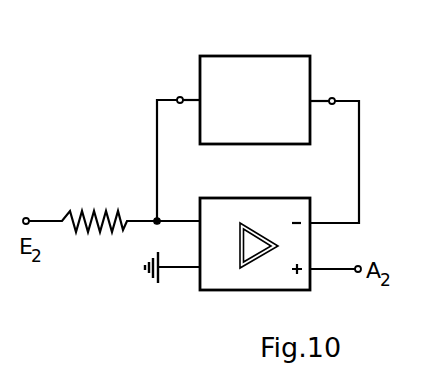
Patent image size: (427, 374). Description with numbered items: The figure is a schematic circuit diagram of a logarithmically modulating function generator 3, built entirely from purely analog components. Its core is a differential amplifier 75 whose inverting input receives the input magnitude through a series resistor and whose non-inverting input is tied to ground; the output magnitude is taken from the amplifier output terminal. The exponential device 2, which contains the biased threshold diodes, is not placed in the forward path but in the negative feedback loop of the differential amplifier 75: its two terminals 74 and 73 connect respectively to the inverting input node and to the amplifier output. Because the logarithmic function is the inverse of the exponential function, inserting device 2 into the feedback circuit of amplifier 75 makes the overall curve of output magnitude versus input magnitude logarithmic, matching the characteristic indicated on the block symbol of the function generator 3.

The exponential function generator device 2 is at (259, 146).
The logarithmically modulating function generator 3 is at (255, 99).
The output terminal of block 2 73 is at (332, 97).
The input terminal of block 2 74 is at (180, 96).
The differential amplifier 75 is at (258, 290).